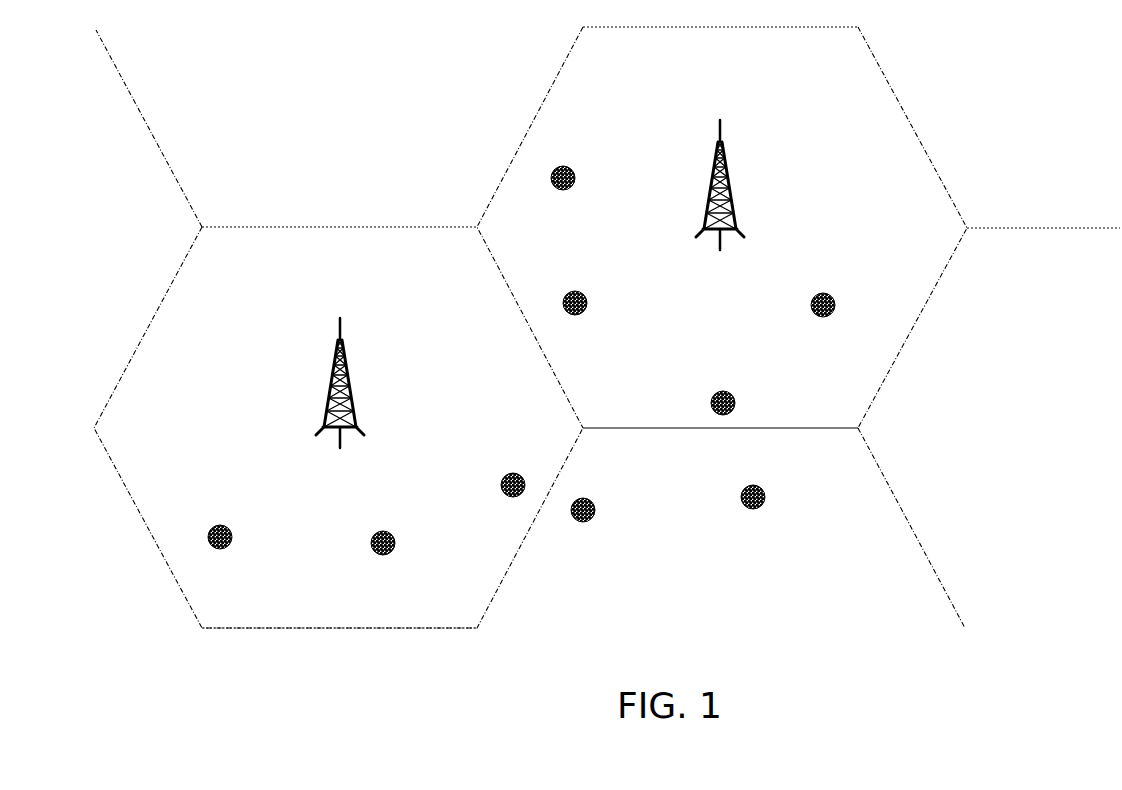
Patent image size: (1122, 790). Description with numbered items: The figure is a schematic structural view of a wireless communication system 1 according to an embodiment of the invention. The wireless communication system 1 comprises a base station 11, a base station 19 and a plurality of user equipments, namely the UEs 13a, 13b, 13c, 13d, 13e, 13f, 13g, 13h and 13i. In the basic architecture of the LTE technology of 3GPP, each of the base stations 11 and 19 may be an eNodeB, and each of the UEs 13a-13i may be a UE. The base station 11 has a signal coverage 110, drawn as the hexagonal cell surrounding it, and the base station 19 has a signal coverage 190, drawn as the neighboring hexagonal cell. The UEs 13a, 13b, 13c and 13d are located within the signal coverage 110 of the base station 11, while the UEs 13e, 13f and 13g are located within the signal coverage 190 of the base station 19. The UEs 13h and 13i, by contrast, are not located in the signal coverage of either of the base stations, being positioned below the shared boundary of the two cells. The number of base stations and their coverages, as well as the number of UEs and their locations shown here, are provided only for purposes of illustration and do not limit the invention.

The wireless communication system 1 is at (1033, 97).
The base station 11 is at (725, 148).
The base station 19 is at (345, 350).
The signal coverage 110 is at (633, 62).
The signal coverage 190 is at (251, 266).
The UE 13a is at (827, 294).
The UE 13b is at (727, 393).
The UE 13c is at (580, 293).
The UE 13d is at (571, 168).
The UE 13e is at (518, 475).
The UE 13f is at (388, 533).
The UE 13g is at (224, 529).
The UE 13h is at (757, 488).
The UE 13i is at (588, 501).